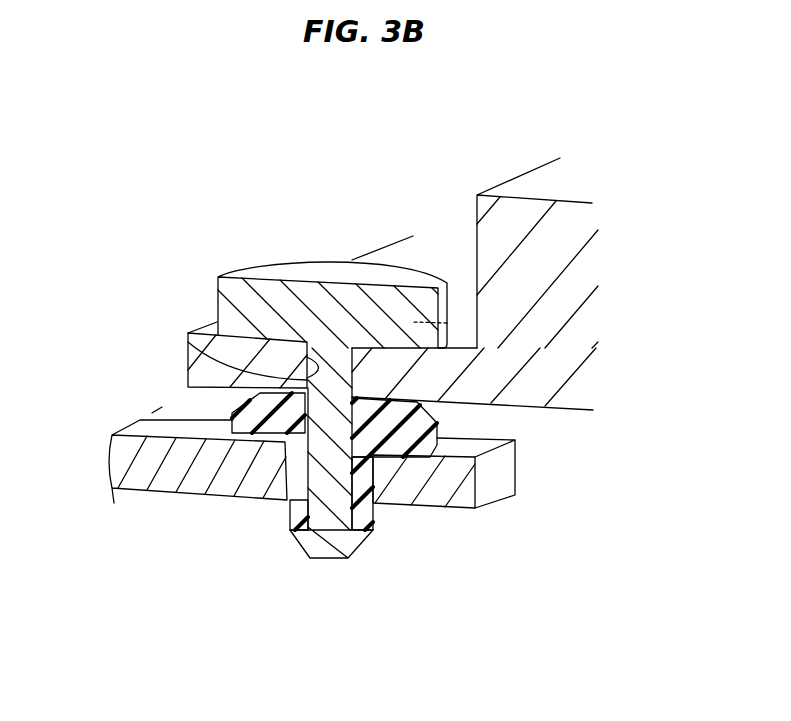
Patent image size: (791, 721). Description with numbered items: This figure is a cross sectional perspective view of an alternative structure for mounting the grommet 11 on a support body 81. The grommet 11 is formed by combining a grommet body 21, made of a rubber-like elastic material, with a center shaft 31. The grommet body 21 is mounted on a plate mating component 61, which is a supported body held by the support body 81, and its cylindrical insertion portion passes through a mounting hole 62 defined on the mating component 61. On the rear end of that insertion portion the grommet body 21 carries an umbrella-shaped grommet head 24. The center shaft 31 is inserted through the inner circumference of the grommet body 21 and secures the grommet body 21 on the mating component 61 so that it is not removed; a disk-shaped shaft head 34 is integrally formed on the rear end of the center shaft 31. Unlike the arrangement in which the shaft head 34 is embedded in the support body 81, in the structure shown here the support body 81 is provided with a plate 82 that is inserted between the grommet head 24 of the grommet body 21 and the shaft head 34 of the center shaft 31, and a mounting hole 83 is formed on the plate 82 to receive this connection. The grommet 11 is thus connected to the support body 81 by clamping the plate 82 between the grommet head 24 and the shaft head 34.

The grommet 11 is at (264, 354).
The shaft head 34 is at (273, 300).
The center shaft 31 is at (447, 323).
The support body 81 is at (530, 223).
The grommet body 21 is at (440, 429).
The mounting hole 83 is at (188, 340).
The plate 82 is at (205, 371).
The grommet head 24 is at (260, 418).
The mating component 61 is at (453, 480).
The mounting hole 62 is at (373, 483).